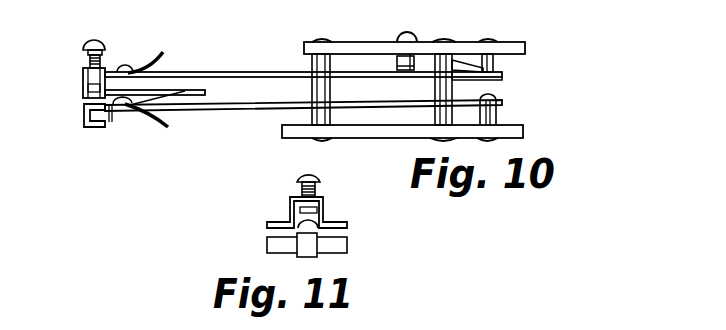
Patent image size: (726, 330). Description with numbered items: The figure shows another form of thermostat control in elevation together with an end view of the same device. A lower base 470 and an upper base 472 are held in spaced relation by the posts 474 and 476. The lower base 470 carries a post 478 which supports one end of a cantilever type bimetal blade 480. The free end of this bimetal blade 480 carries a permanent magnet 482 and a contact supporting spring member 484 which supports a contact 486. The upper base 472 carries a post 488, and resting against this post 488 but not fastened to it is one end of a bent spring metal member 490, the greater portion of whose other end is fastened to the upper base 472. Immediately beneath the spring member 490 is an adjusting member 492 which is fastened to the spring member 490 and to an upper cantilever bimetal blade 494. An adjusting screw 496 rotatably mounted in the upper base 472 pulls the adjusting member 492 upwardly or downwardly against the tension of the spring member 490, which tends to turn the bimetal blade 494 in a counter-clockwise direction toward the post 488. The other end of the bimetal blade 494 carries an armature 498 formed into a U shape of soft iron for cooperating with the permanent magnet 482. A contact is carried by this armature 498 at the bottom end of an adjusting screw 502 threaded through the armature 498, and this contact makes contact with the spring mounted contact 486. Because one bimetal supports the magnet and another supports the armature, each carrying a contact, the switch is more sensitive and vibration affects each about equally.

In FIG. 10, the lower base 470 is at (524, 129).
In FIG. 10, the upper base 472 is at (512, 46).
In FIG. 10, the post 474 is at (314, 70).
In FIG. 10, the post 476 is at (437, 112).
In FIG. 10, the post 478 is at (496, 110).
In FIG. 10, the cantilever type bimetal blade 480 is at (268, 109).
In FIG. 11, the cantilever type bimetal blade 480 is at (312, 248).
In FIG. 10, the permanent magnet 482 is at (83, 118).
In FIG. 11, the permanent magnet 482 is at (267, 248).
In FIG. 10, the contact supporting spring member 484 is at (205, 94).
In FIG. 10, the contact 486 is at (84, 88).
In FIG. 11, the contact 486 is at (306, 223).
In FIG. 10, the post 488 is at (494, 60).
In FIG. 10, the bent spring metal member 490 is at (498, 72).
In FIG. 10, the adjusting member 492 is at (397, 67).
In FIG. 10, the upper cantilever bimetal blade 494 is at (200, 64).
In FIG. 10, the adjusting screw 496 is at (403, 37).
In FIG. 10, the armature 498 is at (83, 74).
In FIG. 11, the armature 498 is at (290, 212).
In FIG. 10, the adjusting screw 502 is at (87, 44).
In FIG. 11, the adjusting screw 502 is at (318, 174).